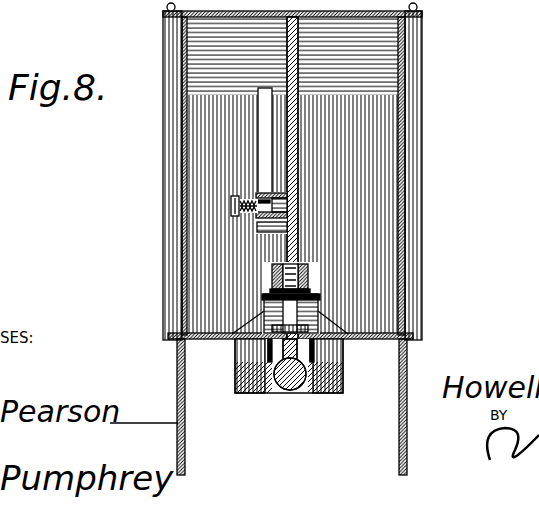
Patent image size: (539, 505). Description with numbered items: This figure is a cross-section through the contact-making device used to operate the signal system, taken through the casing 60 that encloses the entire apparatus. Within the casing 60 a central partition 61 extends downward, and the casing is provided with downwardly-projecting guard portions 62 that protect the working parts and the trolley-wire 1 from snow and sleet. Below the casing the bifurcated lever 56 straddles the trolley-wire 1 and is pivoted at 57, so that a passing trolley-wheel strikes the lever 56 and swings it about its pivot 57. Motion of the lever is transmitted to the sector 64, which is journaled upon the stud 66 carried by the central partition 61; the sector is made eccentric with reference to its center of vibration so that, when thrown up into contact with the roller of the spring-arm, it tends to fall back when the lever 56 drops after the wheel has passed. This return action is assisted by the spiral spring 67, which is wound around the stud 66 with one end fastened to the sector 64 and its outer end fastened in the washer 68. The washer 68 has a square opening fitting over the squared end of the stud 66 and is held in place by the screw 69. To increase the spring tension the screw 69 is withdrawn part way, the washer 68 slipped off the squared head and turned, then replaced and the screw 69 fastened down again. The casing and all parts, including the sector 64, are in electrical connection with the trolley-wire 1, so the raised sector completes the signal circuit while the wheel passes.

The trolley-wire 1 is at (290, 392).
The bifurcated lever 56 is at (343, 370).
The pivot 57 is at (310, 277).
The casing 60 is at (422, 128).
The central partition 61 is at (382, 162).
The guard portions 62 is at (186, 440).
The sector 64 is at (270, 147).
The stud 66 is at (300, 205).
The spiral spring 67 is at (240, 220).
The washer 68 is at (236, 198).
The screw 69 is at (231, 208).